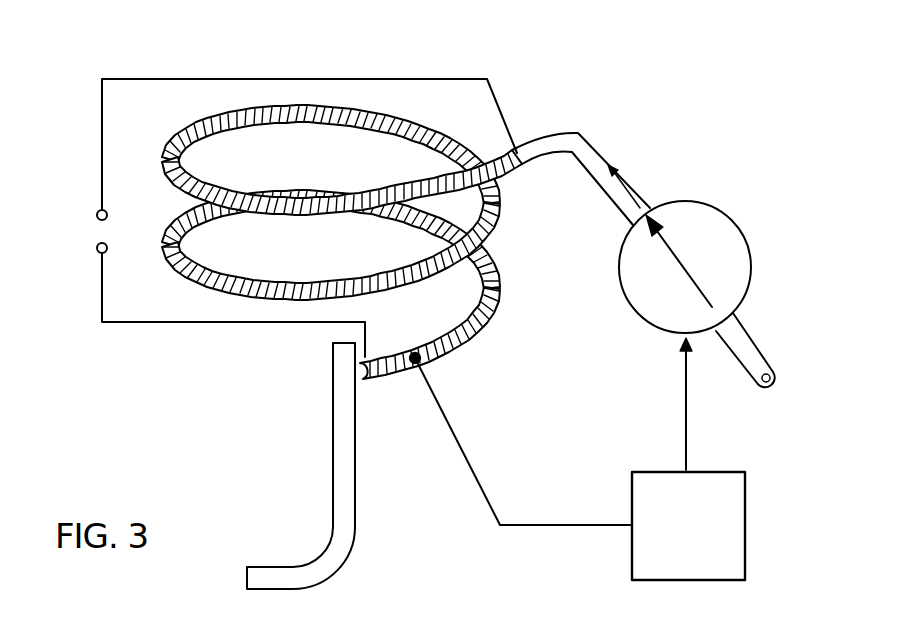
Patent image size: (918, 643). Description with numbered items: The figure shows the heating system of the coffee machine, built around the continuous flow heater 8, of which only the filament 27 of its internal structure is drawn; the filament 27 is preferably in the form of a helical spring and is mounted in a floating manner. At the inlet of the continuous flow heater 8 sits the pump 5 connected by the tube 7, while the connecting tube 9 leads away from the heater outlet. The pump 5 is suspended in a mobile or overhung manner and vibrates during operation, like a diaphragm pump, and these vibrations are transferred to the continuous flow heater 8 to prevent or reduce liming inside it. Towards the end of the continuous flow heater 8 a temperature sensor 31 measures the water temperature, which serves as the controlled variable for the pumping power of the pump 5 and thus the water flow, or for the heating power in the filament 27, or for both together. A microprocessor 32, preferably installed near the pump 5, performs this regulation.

The pump 5 is at (716, 225).
The tube 7 is at (570, 136).
The continuous flow heater 8 is at (433, 121).
The connecting tube 9 is at (340, 461).
The filament 27 is at (222, 79).
The temperature sensor 31 is at (413, 353).
The microprocessor 32 is at (732, 520).